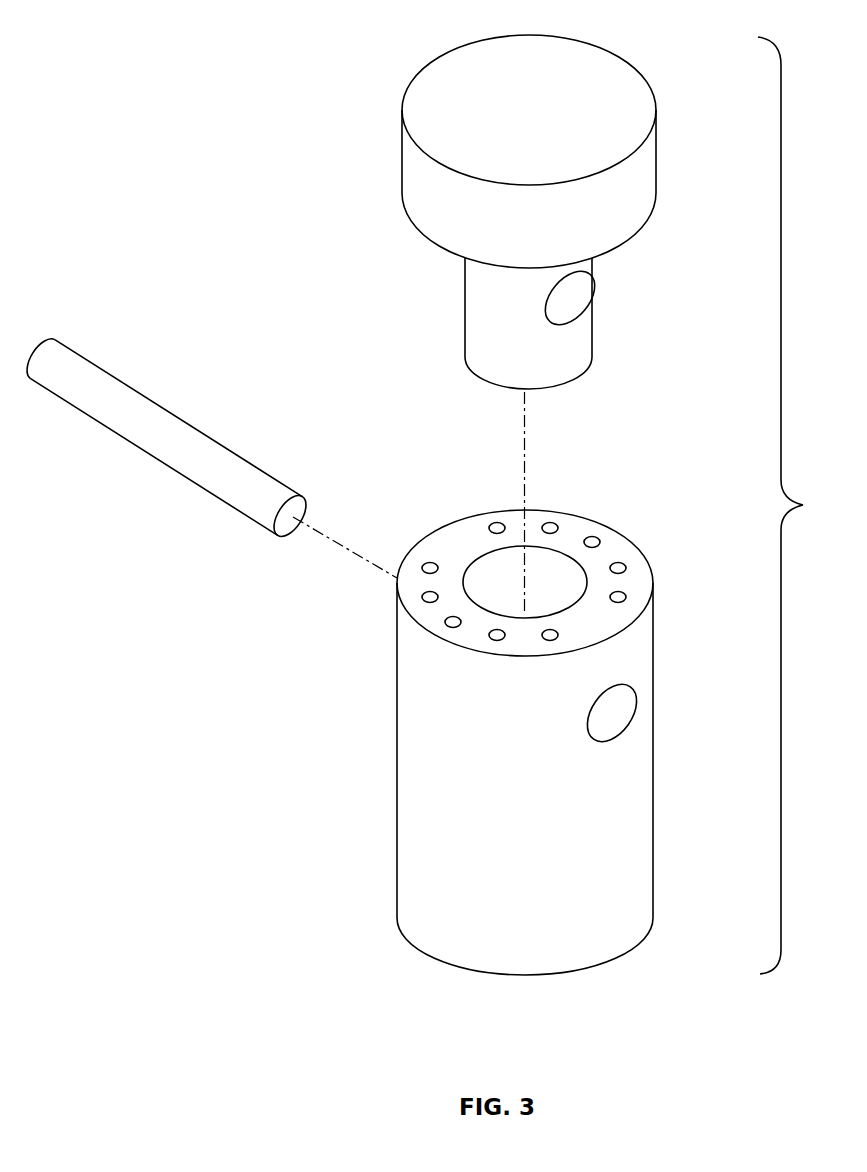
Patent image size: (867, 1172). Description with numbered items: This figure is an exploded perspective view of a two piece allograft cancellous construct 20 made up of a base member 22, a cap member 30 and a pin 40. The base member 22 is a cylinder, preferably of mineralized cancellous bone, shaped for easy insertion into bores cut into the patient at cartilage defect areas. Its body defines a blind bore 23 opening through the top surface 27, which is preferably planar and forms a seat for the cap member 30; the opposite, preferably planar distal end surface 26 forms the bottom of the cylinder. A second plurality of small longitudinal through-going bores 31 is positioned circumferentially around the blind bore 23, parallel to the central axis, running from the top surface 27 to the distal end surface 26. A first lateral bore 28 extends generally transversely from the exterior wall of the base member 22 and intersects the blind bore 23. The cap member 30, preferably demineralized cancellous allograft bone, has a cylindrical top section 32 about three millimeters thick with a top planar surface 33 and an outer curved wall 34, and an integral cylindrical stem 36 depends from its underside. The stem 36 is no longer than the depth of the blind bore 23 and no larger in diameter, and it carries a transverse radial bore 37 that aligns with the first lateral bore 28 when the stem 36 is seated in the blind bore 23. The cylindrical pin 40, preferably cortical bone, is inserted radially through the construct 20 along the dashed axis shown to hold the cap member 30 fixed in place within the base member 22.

The cancellous construct 20 is at (800, 505).
The base member 22 is at (509, 753).
The blind bore 23 is at (483, 578).
The distal end surface 26 is at (528, 977).
The top surface 27 is at (410, 608).
The first lateral bore 28 is at (612, 714).
The cap member 30 is at (517, 206).
The longitudinal through-going bores 31 is at (497, 522).
The cylindrical top section 32 is at (526, 104).
The top planar surface 33 is at (592, 56).
The outer curved wall 34 is at (645, 163).
The stem 36 is at (465, 310).
The transverse radial bore 37 is at (582, 290).
The pin 40 is at (145, 456).